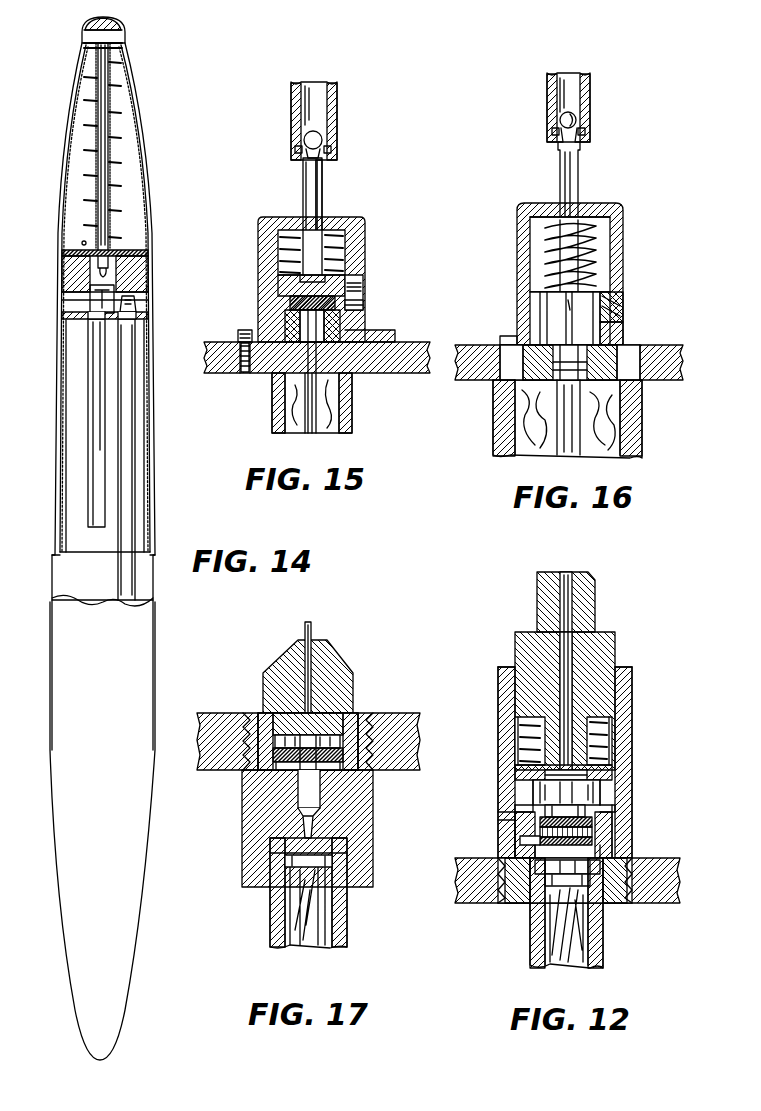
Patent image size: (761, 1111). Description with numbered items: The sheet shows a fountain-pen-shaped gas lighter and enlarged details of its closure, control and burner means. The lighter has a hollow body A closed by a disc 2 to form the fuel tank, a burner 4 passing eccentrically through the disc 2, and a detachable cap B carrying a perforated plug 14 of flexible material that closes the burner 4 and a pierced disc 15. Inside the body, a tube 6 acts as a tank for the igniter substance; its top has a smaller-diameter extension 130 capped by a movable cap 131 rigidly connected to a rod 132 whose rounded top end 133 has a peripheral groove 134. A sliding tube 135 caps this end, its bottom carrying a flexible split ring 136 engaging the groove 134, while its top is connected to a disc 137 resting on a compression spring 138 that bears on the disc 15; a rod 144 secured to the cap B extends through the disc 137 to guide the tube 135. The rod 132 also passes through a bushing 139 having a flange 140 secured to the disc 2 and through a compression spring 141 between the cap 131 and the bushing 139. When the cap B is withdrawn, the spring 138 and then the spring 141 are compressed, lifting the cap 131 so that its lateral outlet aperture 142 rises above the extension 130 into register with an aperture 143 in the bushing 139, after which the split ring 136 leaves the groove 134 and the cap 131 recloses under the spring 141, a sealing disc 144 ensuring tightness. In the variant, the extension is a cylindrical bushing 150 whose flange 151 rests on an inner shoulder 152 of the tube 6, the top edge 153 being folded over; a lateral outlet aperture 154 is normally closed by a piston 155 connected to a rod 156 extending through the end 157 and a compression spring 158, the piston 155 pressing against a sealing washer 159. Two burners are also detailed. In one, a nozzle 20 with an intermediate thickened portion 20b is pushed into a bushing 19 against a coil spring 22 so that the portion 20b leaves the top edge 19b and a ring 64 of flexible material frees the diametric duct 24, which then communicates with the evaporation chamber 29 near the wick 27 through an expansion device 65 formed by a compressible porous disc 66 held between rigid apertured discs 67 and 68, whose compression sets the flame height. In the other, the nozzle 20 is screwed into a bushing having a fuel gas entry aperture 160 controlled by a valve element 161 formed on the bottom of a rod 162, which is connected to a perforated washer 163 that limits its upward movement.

In FIG. 14, the rod 144 is at (132, 44).
In FIG. 15, the rod 144 is at (292, 300).
In FIG. 14, the disc 137 is at (130, 60).
In FIG. 14, the compression spring 138 is at (134, 112).
In FIG. 14, the cap B is at (166, 165).
In FIG. 14, the sliding tube 135 is at (112, 207).
In FIG. 15, the sliding tube 135 is at (291, 100).
In FIG. 16, the sliding tube 135 is at (548, 92).
In FIG. 14, the pierced disc 15 is at (62, 252).
In FIG. 14, the perforated plug 14 is at (62, 280).
In FIG. 14, the burner 4 is at (151, 305).
In FIG. 14, the disc 2 is at (80, 330).
In FIG. 15, the disc 2 is at (405, 374).
In FIG. 14, the tube 6 is at (94, 530).
In FIG. 15, the tube 6 is at (272, 421).
In FIG. 14, the hollow body A is at (152, 967).
In FIG. 15, the rounded top end 133 is at (324, 136).
In FIG. 16, the rounded top end 133 is at (577, 118).
In FIG. 15, the peripheral groove 134 is at (301, 140).
In FIG. 16, the peripheral groove 134 is at (553, 124).
In FIG. 15, the flexible split ring 136 is at (330, 150).
In FIG. 15, the rod 132 is at (305, 187).
In FIG. 15, the compression spring 141 is at (340, 226).
In FIG. 15, the bushing 139 is at (365, 238).
In FIG. 15, the movable cap 131 is at (283, 273).
In FIG. 15, the smaller-diameter extension 130 is at (287, 322).
In FIG. 15, the aperture 143 is at (360, 290).
In FIG. 15, the lateral outlet aperture 142 is at (355, 313).
In FIG. 15, the flange 140 is at (392, 336).
In FIG. 16, the rod 156 is at (560, 176).
In FIG. 16, the end of the bushing 157 is at (600, 212).
In FIG. 16, the bushing 150 is at (623, 232).
In FIG. 16, the compression spring 158 is at (545, 252).
In FIG. 16, the sealing washer 159 is at (536, 316).
In FIG. 16, the piston 155 is at (607, 298).
In FIG. 16, the lateral outlet aperture 154 is at (617, 320).
In FIG. 16, the top edge 153 is at (510, 338).
In FIG. 16, the flange 151 is at (625, 348).
In FIG. 16, the inner shoulder 152 is at (522, 380).
In FIG. 17, the nozzle 20 is at (352, 659).
In FIG. 12, the nozzle 20 is at (597, 578).
In FIG. 17, the rod 162 is at (305, 630).
In FIG. 17, the perforated washer 163 is at (276, 752).
In FIG. 17, the bushing 19 is at (244, 882).
In FIG. 12, the bushing 19 is at (489, 794).
In FIG. 17, the valve element 161 is at (303, 818).
In FIG. 17, the fuel gas entry aperture 160 is at (298, 838).
In FIG. 12, the intermediate thickened portion 20b is at (525, 648).
In FIG. 12, the top edge of the bushing 19b is at (505, 684).
In FIG. 12, the coil spring 22 is at (520, 732).
In FIG. 12, the diametric duct 24 is at (522, 779).
In FIG. 12, the ring 64 is at (627, 782).
In FIG. 12, the expansion device 65 is at (575, 810).
In FIG. 12, the rigid apertured disc 67 is at (587, 830).
In FIG. 12, the porous disc 66 is at (603, 848).
In FIG. 12, the rigid apertured disc 68 is at (528, 847).
In FIG. 12, the evaporation chamber 29 is at (575, 886).
In FIG. 12, the wick 27 is at (583, 946).